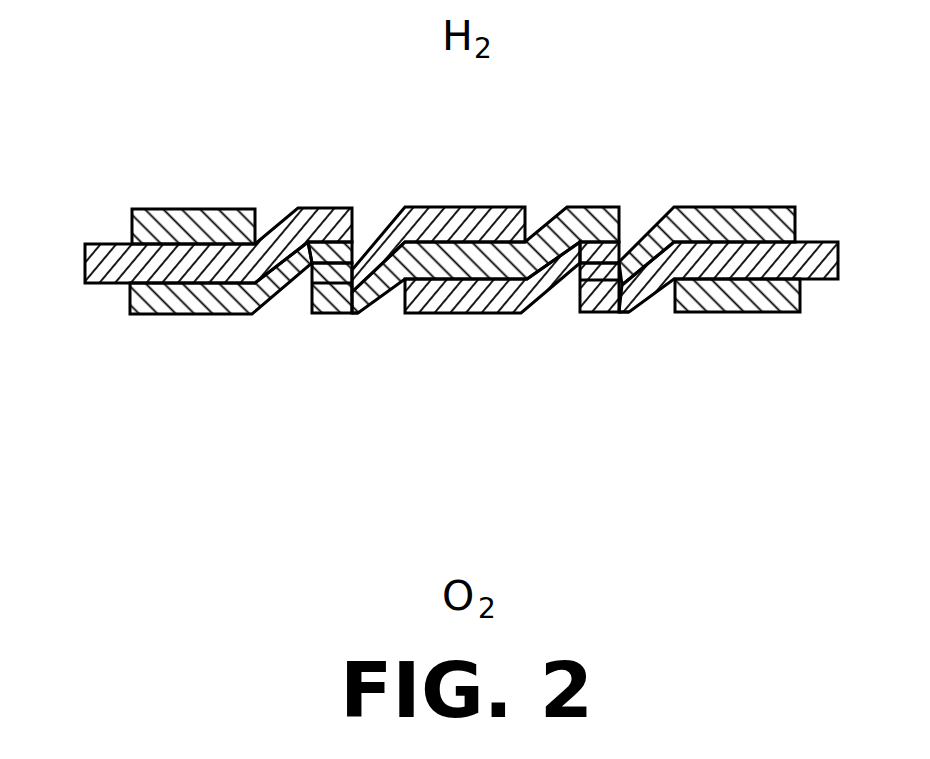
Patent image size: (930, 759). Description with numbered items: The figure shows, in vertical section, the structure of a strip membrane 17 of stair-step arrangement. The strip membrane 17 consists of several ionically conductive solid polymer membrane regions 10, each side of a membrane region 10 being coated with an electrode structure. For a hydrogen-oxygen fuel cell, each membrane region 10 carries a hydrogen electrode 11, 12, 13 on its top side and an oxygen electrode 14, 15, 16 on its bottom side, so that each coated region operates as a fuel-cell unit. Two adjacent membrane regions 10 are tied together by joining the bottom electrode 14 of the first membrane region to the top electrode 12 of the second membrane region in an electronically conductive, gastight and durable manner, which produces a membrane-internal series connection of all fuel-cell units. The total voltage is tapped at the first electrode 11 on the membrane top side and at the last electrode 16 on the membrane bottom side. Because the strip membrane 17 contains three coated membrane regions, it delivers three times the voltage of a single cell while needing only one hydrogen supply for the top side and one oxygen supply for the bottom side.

The ionically conductive solid polymer membrane region 10 is at (223, 272).
The hydrogen electrode 11 is at (188, 209).
The hydrogen electrode 12 is at (453, 208).
The hydrogen electrode 13 is at (745, 207).
The oxygen electrode 14 is at (142, 306).
The oxygen electrode 15 is at (431, 300).
The oxygen electrode 16 is at (710, 300).
The strip membrane 17 is at (852, 428).